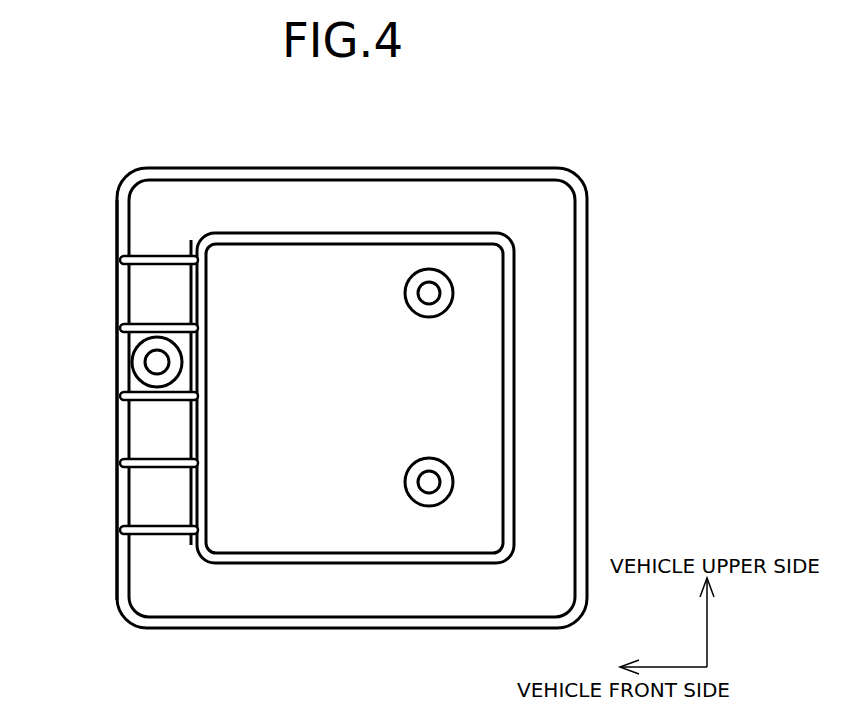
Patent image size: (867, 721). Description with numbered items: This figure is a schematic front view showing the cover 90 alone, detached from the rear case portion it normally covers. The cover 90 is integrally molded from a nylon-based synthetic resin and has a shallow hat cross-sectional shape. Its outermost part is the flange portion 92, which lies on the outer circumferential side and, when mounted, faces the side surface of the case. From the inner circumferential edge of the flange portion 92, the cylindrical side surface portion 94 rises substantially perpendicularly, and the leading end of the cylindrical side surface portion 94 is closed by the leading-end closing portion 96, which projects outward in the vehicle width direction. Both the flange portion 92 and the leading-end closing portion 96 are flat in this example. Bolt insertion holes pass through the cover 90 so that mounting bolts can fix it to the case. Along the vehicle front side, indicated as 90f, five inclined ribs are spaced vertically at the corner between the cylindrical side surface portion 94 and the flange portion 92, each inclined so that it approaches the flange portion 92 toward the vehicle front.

The cover 90 is at (510, 150).
The front portion of protector 90f is at (98, 188).
The flange portion 92 is at (557, 358).
The cylindrical side surface portion 94 is at (345, 558).
The leading-end closing portion 96 is at (273, 339).